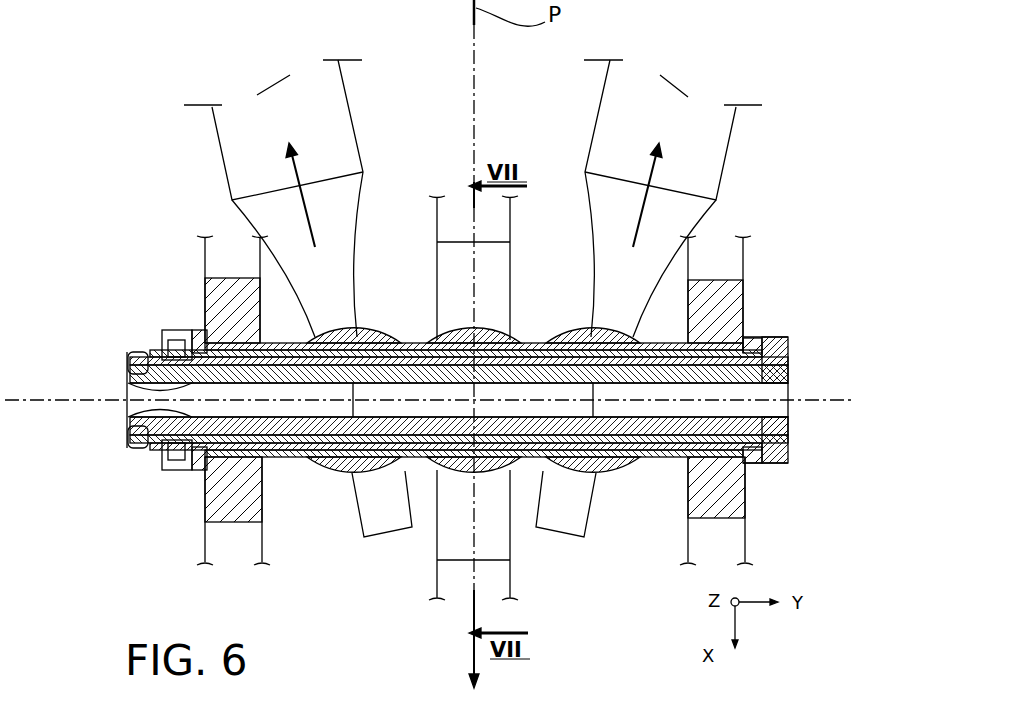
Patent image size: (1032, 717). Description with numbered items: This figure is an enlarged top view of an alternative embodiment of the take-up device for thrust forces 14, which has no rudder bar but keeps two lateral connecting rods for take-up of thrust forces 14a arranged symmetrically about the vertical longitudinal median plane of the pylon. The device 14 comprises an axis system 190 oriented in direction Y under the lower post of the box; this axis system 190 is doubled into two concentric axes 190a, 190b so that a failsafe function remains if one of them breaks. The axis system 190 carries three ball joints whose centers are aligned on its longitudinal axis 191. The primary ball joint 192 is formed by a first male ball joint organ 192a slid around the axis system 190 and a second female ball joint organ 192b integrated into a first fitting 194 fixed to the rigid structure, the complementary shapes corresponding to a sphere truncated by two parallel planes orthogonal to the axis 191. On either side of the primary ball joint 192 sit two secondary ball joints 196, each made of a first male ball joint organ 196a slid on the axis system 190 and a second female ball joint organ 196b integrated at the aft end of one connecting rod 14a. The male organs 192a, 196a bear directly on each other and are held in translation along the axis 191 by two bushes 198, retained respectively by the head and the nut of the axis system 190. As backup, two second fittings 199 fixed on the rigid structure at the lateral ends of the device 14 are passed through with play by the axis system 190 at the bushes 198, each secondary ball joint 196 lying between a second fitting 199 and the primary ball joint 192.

The take-up device for thrust forces 14 is at (796, 186).
The lateral connecting rod for take-up of thrust forces 14a is at (337, 123).
The axis system 190 is at (295, 333).
The concentric axis 190a is at (280, 300).
The concentric axis 190b is at (126, 385).
The longitudinal axis 191 is at (122, 403).
The primary ball joint 192 is at (427, 333).
The first male ball joint organ 192a is at (437, 485).
The second female ball joint organ 192b is at (523, 328).
The first fitting 194 is at (500, 543).
The secondary ball joint 196 is at (342, 335).
The first male ball joint organ 196a is at (378, 330).
The second female ball joint organ 196b is at (333, 338).
The bush 198 is at (192, 332).
The second fitting 199 is at (200, 330).